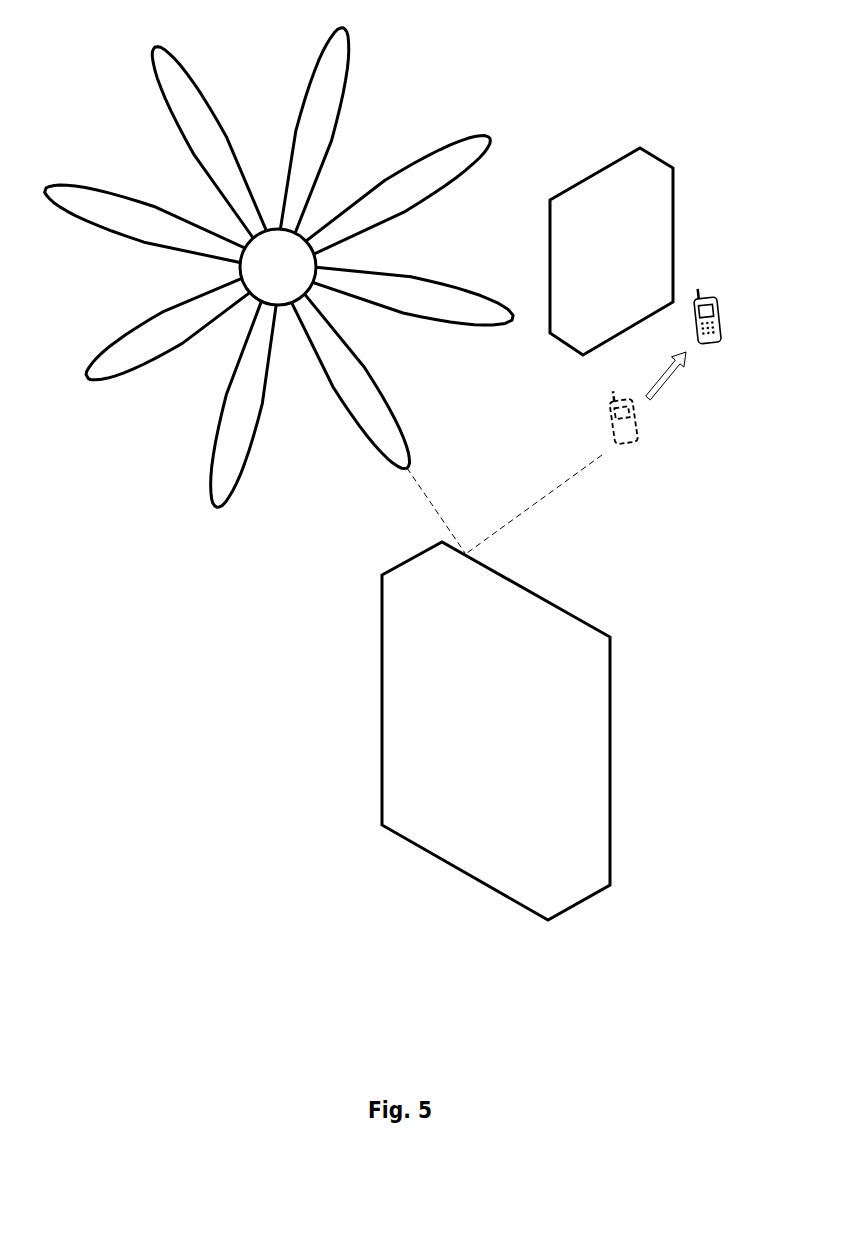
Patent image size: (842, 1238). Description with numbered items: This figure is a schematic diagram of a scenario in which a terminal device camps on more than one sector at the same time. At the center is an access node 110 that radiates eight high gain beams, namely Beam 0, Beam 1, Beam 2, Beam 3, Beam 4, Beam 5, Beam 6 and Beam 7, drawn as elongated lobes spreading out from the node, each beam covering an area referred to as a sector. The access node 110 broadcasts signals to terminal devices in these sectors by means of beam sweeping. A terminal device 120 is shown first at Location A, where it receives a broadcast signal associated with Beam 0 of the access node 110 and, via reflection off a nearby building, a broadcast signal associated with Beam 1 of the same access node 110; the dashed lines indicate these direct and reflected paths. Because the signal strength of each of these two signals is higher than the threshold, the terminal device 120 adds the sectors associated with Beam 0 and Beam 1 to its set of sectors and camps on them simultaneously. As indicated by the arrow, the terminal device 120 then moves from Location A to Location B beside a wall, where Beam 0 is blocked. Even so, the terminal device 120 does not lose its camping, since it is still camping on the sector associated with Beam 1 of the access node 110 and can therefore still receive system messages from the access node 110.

The access node 110 is at (278, 267).
The terminal device 120 is at (675, 381).
The Beam # 0 is at (395, 292).
The Beam # 1 is at (342, 367).
The Beam # 2 is at (247, 386).
The Beam # 3 is at (182, 322).
The Beam # 4 is at (162, 229).
The Beam # 5 is at (216, 157).
The Beam # 6 is at (310, 147).
The Beam # 7 is at (383, 202).